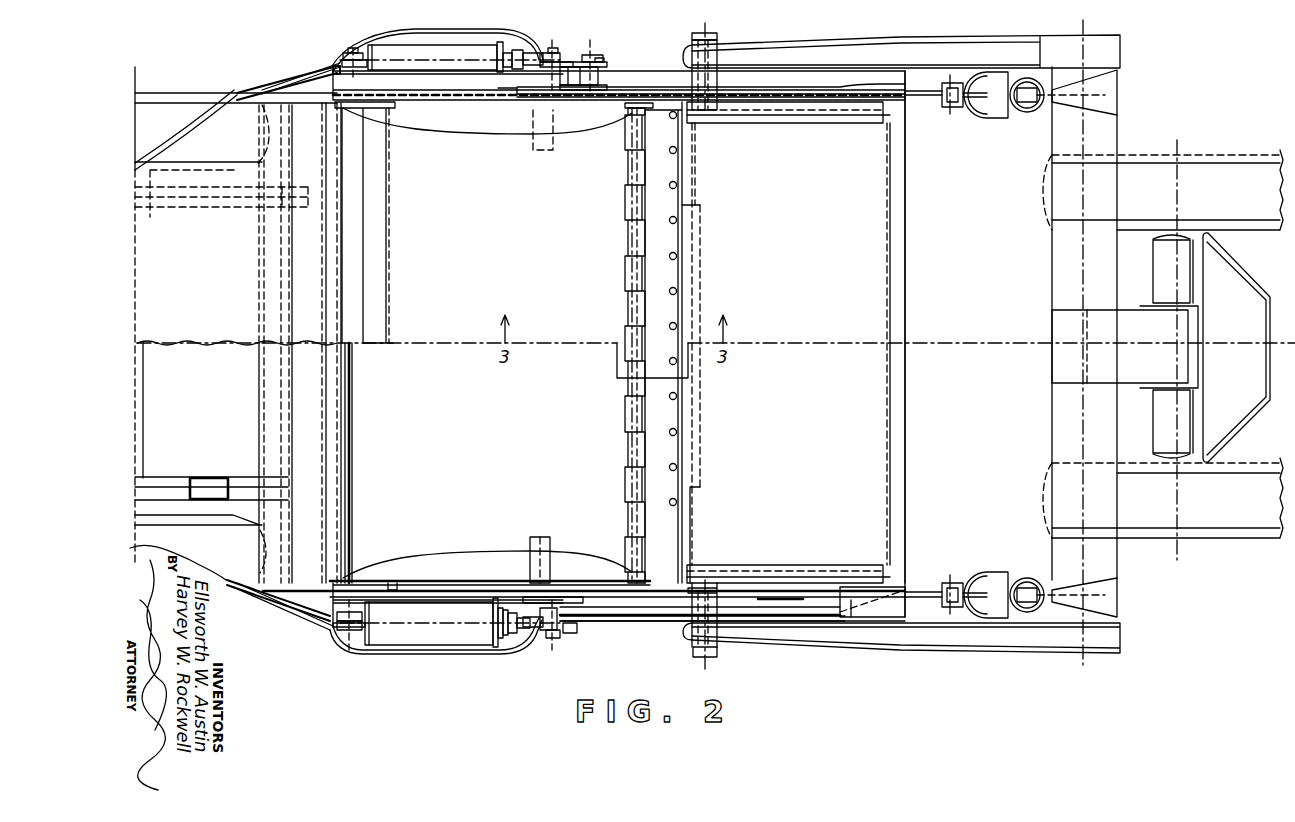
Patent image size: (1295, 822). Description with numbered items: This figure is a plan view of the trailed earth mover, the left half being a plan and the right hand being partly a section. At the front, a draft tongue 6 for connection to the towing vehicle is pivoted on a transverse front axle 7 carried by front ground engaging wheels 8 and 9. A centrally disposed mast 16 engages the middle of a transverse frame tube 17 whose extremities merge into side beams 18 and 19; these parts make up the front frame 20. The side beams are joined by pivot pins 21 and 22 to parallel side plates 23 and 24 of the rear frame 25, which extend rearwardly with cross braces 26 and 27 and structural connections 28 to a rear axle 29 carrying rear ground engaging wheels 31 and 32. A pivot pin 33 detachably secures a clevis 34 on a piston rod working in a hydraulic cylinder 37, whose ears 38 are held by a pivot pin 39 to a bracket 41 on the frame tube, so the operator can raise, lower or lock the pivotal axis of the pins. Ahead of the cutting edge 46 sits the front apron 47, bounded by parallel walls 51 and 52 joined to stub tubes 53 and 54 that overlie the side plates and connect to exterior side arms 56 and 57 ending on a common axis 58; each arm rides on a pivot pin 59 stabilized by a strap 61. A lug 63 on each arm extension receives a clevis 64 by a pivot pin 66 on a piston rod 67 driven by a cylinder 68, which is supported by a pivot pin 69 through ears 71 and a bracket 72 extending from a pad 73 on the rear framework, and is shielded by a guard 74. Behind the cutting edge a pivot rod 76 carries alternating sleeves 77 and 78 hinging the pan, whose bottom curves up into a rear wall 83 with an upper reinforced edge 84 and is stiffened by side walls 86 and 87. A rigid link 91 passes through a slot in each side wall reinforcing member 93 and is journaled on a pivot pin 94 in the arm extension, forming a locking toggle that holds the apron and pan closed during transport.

The draft tongue 6 is at (1242, 425).
The transverse front axle 7 is at (1158, 233).
The front ground engaging wheel 8 is at (1241, 535).
The front ground engaging wheel 9 is at (1242, 166).
The mast 16 is at (1132, 318).
The transverse frame tube 17 is at (1058, 414).
The side beam 18 is at (985, 646).
The side beam 19 is at (948, 45).
The front frame 20 is at (1125, 570).
The pivot pin 21 is at (712, 652).
The pivot pin 22 is at (698, 35).
The side plate 23 is at (670, 594).
The side plate 24 is at (637, 92).
The rear frame 25 is at (628, 623).
The cross brace 26 is at (287, 279).
The cross brace 27 is at (297, 408).
The structural connections 28 is at (188, 205).
The rear axle 29 is at (149, 386).
The rear ground engaging wheel 31 is at (163, 518).
The rear ground engaging wheel 32 is at (232, 172).
The pivot pin 33 is at (953, 108).
The clevis 34 is at (952, 84).
The cylinder 37 is at (1003, 112).
The ears 38 is at (1040, 112).
The pivot pin 39 is at (1035, 78).
The bracket 41 is at (1118, 102).
The cutting edge 46 is at (698, 195).
The front apron 47 is at (910, 305).
The parallel wall 51 is at (828, 568).
The parallel wall 52 is at (827, 115).
The stub tube 53 is at (906, 590).
The stub tube 54 is at (910, 100).
The side arm 56 is at (736, 606).
The side arm 57 is at (775, 86).
The common axis 58 is at (598, 55).
The pivot pin 59 is at (604, 62).
The strap 61 is at (590, 50).
The lug 63 is at (560, 640).
The clevis 64 is at (538, 57).
The pivot pin 66 is at (554, 53).
The piston rod 67 is at (521, 57).
The cylinder 68 is at (433, 52).
The pivot pin 69 is at (355, 52).
The ears 71 is at (342, 62).
The bracket 72 is at (318, 70).
The pad 73 is at (275, 88).
The guard 74 is at (404, 29).
The pivot rod 76 is at (622, 452).
The sleeve 77 is at (645, 388).
The sleeve 78 is at (622, 418).
The rear wall 83 is at (352, 476).
The upper reinforced edge 84 is at (385, 302).
The side wall 86 is at (389, 582).
The side wall 87 is at (527, 106).
The link 91 is at (578, 599).
The side wall reinforcing member 93 is at (832, 612).
The pivot pin 94 is at (571, 633).